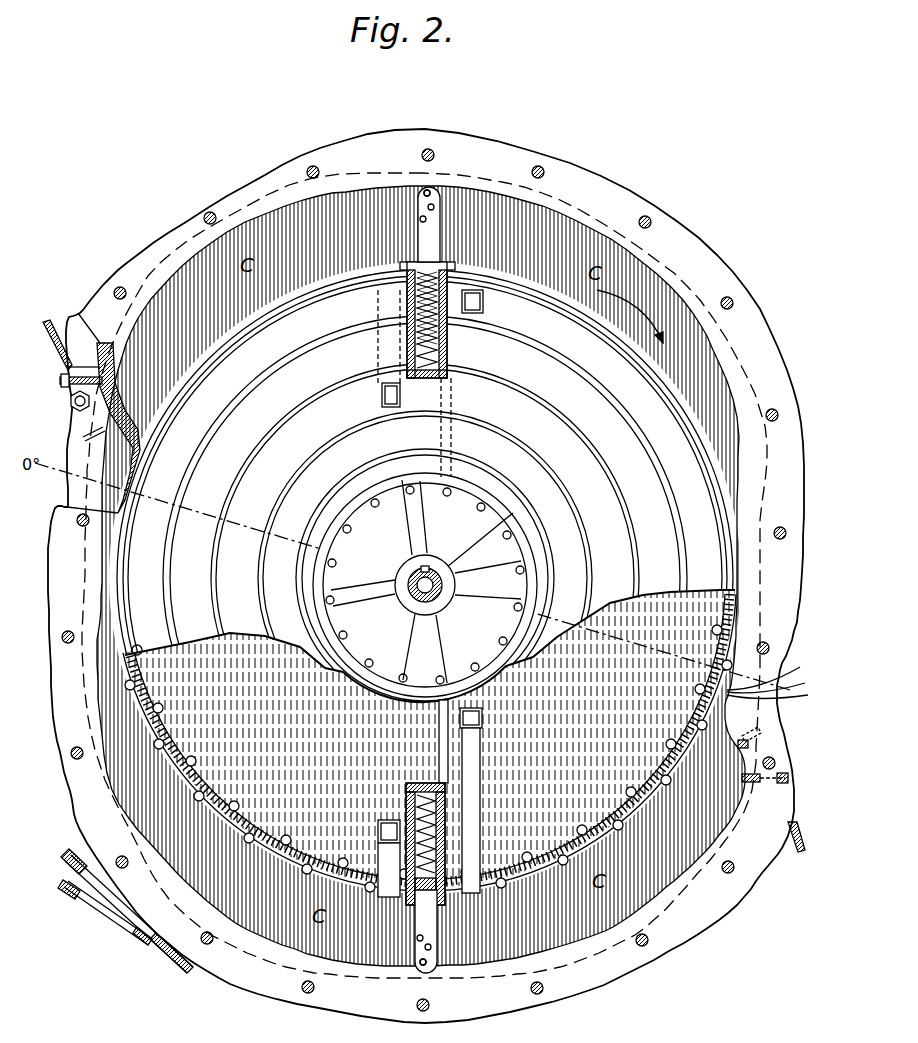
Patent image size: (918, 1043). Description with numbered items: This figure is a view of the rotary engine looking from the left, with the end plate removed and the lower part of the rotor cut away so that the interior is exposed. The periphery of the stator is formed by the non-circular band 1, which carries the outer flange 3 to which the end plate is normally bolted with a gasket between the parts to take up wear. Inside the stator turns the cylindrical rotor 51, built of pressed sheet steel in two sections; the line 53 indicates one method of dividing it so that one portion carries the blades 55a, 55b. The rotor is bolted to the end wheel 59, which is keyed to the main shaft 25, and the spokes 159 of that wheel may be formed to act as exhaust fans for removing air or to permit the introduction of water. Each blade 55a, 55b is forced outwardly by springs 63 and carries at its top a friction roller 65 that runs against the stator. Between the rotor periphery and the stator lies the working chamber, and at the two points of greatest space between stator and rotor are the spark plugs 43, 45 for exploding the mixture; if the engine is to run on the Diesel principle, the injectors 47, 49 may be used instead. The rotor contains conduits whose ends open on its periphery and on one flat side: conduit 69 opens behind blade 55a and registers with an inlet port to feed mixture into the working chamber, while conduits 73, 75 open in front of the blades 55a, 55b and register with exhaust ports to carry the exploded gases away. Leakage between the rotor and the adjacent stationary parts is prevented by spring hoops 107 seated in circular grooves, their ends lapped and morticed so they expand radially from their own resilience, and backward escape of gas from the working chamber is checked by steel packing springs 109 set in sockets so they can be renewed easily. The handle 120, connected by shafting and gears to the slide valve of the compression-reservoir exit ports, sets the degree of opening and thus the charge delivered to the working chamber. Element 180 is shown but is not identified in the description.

The non-circular band 1 is at (68, 507).
The outer flange 3 is at (182, 221).
The main shaft 25 is at (443, 608).
The spark plug 43 is at (107, 378).
The spark plug 45 is at (742, 778).
The injector 47 is at (113, 420).
The injector 49 is at (738, 740).
The rotor 51 is at (302, 292).
The division line 53 is at (450, 341).
The blade 55a is at (421, 242).
The blade 55b is at (428, 917).
The end wheel 59 is at (450, 570).
The spring 63 is at (428, 293).
The friction roller 65 is at (421, 186).
The conduit 69 is at (391, 397).
The conduit 73 is at (478, 302).
The conduit 75 is at (378, 833).
The spring hoop 107 is at (580, 327).
The packing spring 109 is at (779, 676).
The handle 120 is at (127, 948).
The spoke 159 is at (435, 518).
The cable 180 is at (784, 698).